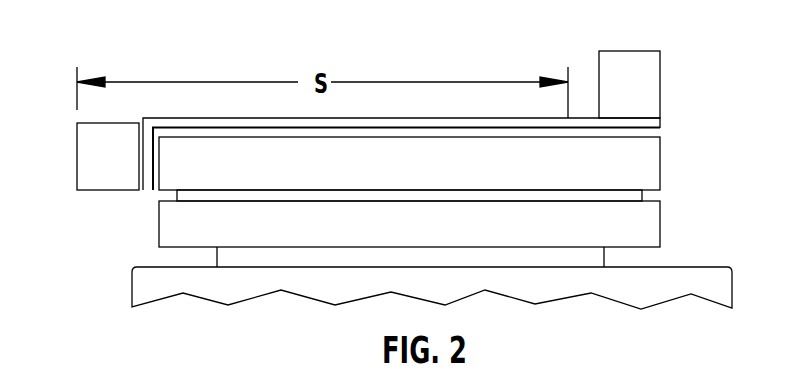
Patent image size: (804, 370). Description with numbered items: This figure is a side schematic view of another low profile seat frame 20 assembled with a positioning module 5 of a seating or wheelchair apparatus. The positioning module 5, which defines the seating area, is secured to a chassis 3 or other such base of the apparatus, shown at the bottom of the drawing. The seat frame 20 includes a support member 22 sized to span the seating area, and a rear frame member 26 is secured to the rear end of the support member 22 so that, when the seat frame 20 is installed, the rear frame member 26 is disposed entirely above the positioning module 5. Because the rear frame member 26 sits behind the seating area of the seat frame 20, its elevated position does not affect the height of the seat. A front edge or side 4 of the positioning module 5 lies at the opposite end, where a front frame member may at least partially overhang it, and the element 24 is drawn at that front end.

The seat frame 20 is at (464, 58).
The support member 22 is at (233, 117).
The front edge or side 4 is at (159, 163).
The left connector block 24 is at (107, 152).
The rear frame member 26 is at (646, 83).
The positioning module 5 is at (613, 190).
The chassis 3 is at (723, 277).